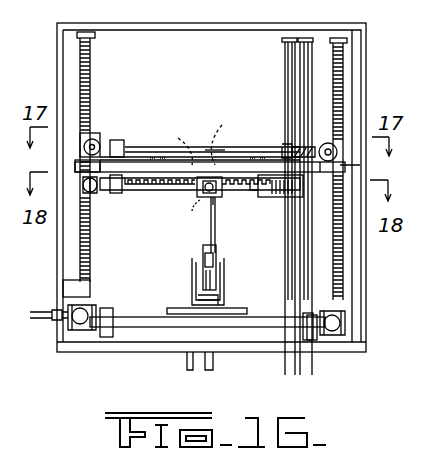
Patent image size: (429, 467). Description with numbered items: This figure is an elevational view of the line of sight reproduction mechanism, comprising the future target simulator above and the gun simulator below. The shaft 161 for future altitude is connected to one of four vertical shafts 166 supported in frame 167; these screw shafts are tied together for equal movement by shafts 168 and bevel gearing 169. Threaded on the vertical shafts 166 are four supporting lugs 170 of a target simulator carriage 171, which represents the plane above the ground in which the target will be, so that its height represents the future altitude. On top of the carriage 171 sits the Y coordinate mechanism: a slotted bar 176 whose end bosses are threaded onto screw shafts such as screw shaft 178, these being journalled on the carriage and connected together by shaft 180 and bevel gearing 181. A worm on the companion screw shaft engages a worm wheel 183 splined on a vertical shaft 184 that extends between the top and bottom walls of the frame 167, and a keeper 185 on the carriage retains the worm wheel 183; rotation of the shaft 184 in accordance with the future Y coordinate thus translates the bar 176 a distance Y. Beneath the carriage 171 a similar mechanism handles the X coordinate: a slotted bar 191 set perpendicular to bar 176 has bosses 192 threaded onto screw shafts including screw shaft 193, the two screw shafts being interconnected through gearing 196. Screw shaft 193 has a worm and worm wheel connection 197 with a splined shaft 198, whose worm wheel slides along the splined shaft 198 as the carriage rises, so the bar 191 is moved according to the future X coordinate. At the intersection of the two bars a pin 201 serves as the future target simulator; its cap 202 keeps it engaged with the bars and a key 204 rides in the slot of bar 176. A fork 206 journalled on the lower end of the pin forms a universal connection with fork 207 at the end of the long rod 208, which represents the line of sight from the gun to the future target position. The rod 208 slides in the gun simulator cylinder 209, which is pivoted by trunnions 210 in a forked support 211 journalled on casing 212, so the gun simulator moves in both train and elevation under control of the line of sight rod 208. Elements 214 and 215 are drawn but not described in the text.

The shaft 161 is at (47, 320).
The vertical shafts 166 is at (91, 240).
The frame 167 is at (57, 253).
The shafts 168 is at (265, 330).
The bevel gearing 169 is at (96, 310).
The supporting lugs 170 is at (350, 165).
The target simulator carriage 171 is at (75, 165).
The slotted bar 176 is at (236, 158).
The screw shaft 178 is at (94, 142).
The shaft 180 is at (124, 146).
The bevel gearing 181 is at (92, 140).
The worm wheel 183 is at (325, 143).
The shaft 184 is at (305, 85).
The keeper 185 is at (283, 147).
The slotted bar 191 is at (190, 183).
The bosses 192 is at (197, 192).
The screw shaft 193 is at (150, 190).
The gearing 196 is at (79, 186).
The worm and worm wheel connection 197 is at (272, 198).
The splined shaft 198 is at (290, 242).
The pin 201 is at (180, 142).
The cap 202 is at (206, 157).
The key 204 is at (224, 136).
The fork 206 is at (180, 216).
The fork 207 is at (214, 200).
The rod 208 is at (210, 241).
The cylinder 209 is at (205, 258).
The trunnions 210 is at (214, 270).
The forked support 211 is at (224, 278).
The casing 212 is at (191, 301).
The pin 214 is at (205, 288).
The support plate 215 is at (217, 298).